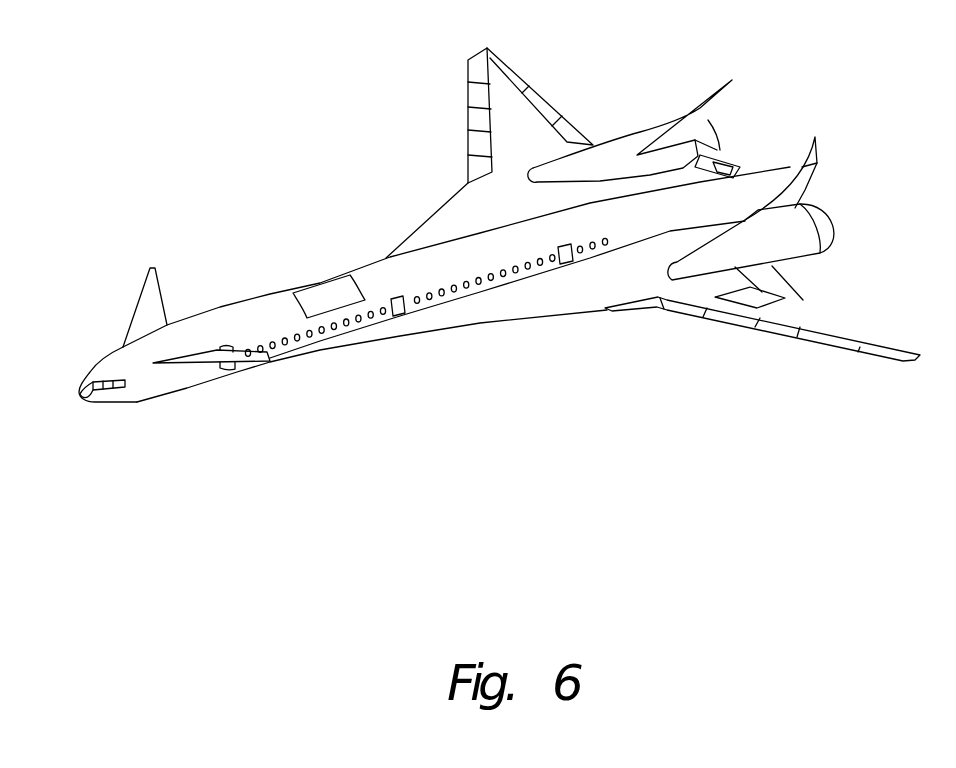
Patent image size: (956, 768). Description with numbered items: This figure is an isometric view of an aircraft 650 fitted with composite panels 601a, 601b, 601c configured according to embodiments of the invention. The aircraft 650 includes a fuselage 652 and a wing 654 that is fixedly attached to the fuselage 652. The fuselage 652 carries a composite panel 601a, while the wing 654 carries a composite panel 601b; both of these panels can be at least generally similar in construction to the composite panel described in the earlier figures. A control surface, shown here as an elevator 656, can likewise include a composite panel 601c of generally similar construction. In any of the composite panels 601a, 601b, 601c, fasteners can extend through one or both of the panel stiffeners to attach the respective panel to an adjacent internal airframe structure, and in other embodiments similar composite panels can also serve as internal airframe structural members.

The aircraft 650 is at (440, 353).
The fuselage 652 is at (259, 297).
The wing 654 is at (817, 323).
The elevator 656 is at (724, 152).
The composite panel 601a is at (325, 296).
The composite panel 601b is at (787, 281).
The composite panel 601c is at (745, 168).